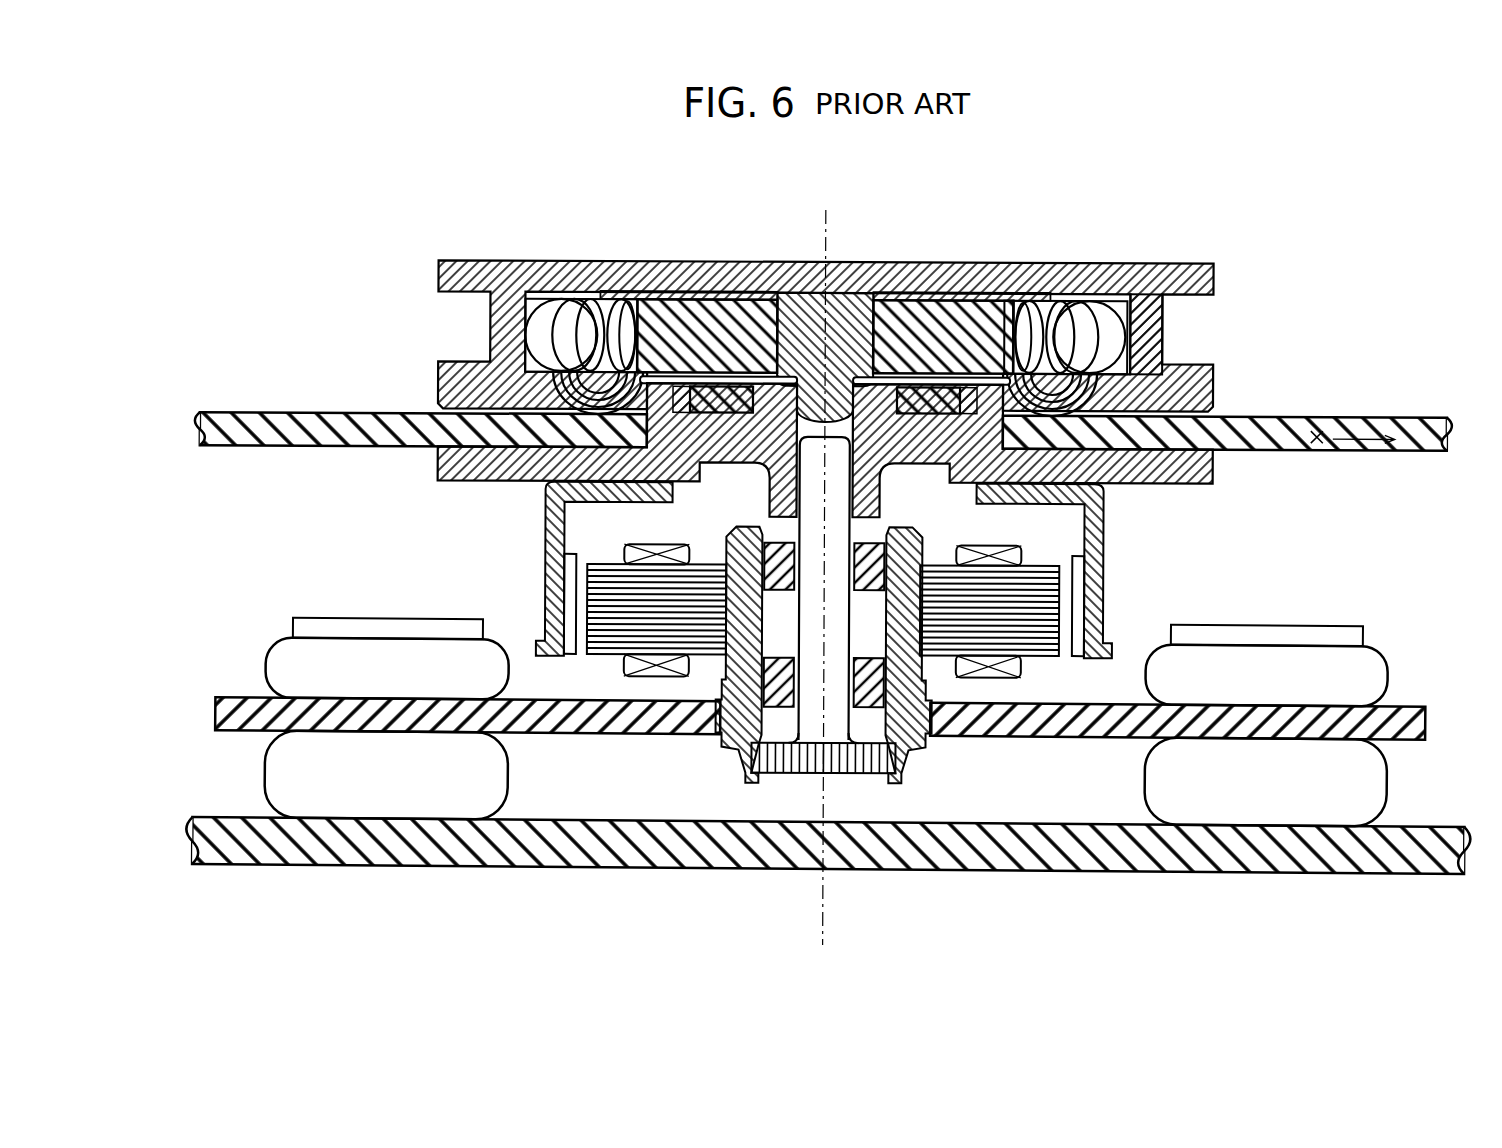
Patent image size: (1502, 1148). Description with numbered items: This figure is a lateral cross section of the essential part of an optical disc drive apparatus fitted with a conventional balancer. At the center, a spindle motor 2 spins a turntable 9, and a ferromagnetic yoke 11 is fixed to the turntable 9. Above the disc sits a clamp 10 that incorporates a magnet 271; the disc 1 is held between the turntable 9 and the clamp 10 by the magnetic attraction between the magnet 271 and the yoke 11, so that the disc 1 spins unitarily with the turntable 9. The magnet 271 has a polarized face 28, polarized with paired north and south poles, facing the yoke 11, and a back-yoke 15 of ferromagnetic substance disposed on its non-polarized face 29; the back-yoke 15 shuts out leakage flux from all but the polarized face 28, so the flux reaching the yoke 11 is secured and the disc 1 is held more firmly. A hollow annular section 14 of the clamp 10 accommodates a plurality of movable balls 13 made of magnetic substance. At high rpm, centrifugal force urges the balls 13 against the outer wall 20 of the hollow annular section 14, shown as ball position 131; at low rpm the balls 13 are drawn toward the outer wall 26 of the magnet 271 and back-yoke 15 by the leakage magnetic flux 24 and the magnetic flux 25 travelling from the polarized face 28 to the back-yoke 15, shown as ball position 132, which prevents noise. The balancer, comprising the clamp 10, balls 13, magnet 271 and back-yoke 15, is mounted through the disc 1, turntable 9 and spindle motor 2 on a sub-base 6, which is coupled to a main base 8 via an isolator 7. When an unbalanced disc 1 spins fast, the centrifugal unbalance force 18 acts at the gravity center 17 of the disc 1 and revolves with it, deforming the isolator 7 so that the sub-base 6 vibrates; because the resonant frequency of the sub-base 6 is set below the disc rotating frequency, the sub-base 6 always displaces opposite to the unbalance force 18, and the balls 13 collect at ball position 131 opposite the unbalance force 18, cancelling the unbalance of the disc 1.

The disc 1 is at (1425, 415).
The spindle motor 2 is at (1105, 596).
The sub-base 6 is at (1405, 715).
The isolator 7 is at (1270, 665).
The main base 8 is at (1305, 860).
The turntable 9 is at (1165, 484).
The clamp 10 is at (1192, 262).
The ferromagnetic yoke 11 is at (935, 330).
The movable balls 13 is at (830, 290).
The ball position 131 is at (491, 289).
The ball position 132 is at (1100, 332).
The hollow annular section 14 is at (1117, 262).
The back-yoke 15 is at (975, 292).
The gravity center 17 is at (1317, 442).
The unbalance force 18 is at (1345, 450).
The outer wall 20 is at (530, 372).
The leakage magnetic flux 24 is at (600, 300).
The magnetic flux 25 is at (535, 332).
The outer wall of magnet 26 is at (628, 300).
The magnet 271 is at (1004, 297).
The polarized face 28 is at (745, 292).
The non-polarized face 29 is at (680, 305).